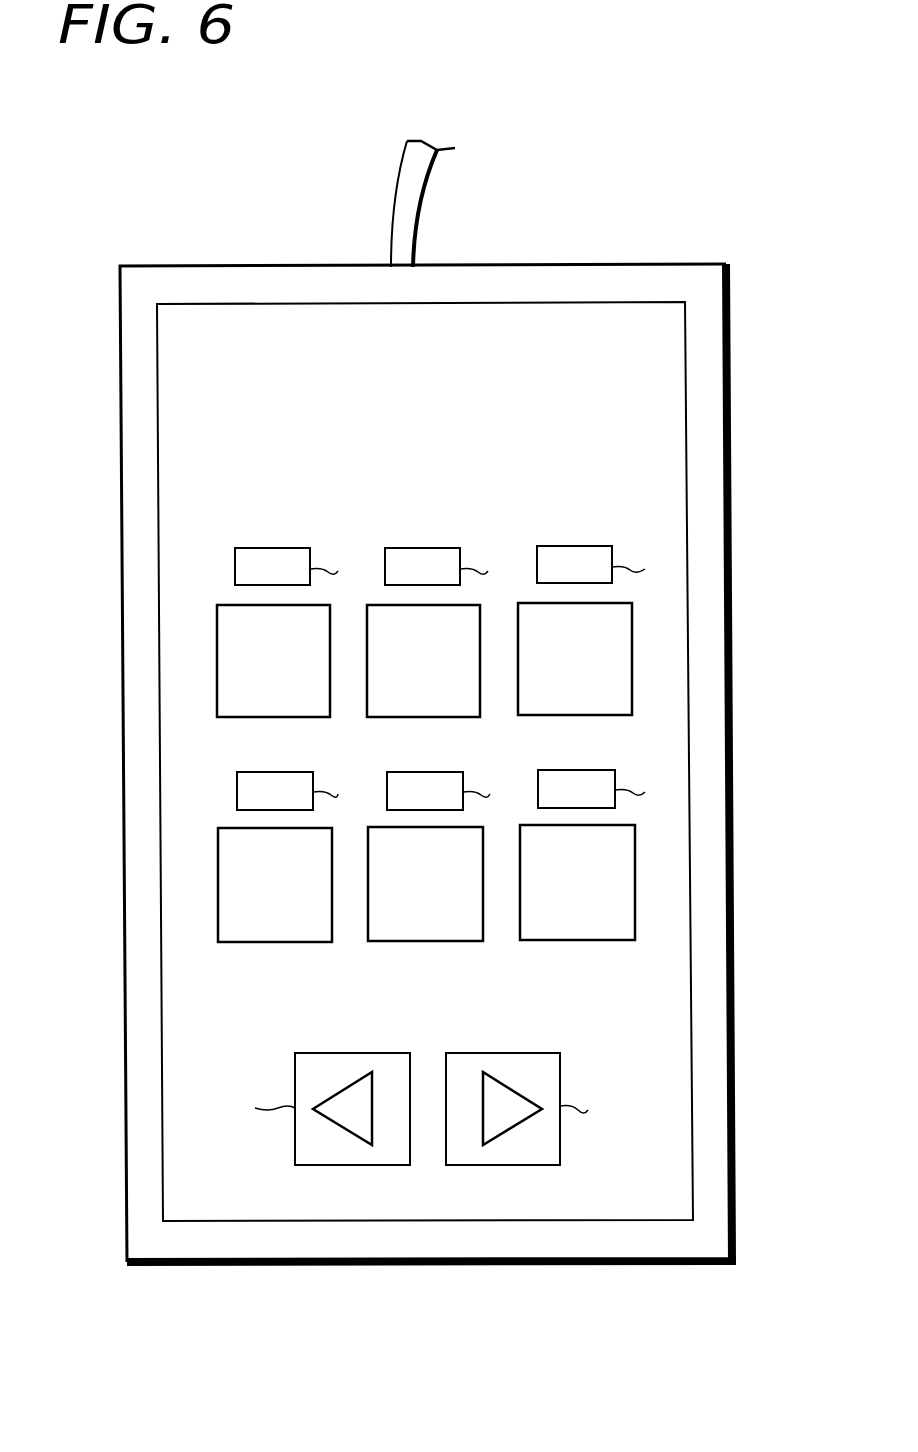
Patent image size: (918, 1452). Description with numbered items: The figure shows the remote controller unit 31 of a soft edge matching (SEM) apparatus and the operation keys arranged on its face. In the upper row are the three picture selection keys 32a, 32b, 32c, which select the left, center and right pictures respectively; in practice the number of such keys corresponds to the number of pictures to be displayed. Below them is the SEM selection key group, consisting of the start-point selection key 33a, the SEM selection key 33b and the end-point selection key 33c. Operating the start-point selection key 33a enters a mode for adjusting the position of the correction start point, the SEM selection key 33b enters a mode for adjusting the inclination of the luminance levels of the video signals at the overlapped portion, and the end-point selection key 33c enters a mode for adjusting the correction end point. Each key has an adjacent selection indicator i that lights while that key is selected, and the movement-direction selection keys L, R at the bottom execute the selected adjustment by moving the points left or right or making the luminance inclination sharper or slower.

The remote controller unit 31 is at (793, 1162).
The picture selection key 32a is at (217, 660).
The picture selection key 32b is at (482, 702).
The picture selection key 32c is at (632, 655).
The start-point selection key 33a is at (218, 886).
The SEM selection key 33b is at (483, 921).
The end-point selection key 33c is at (635, 860).